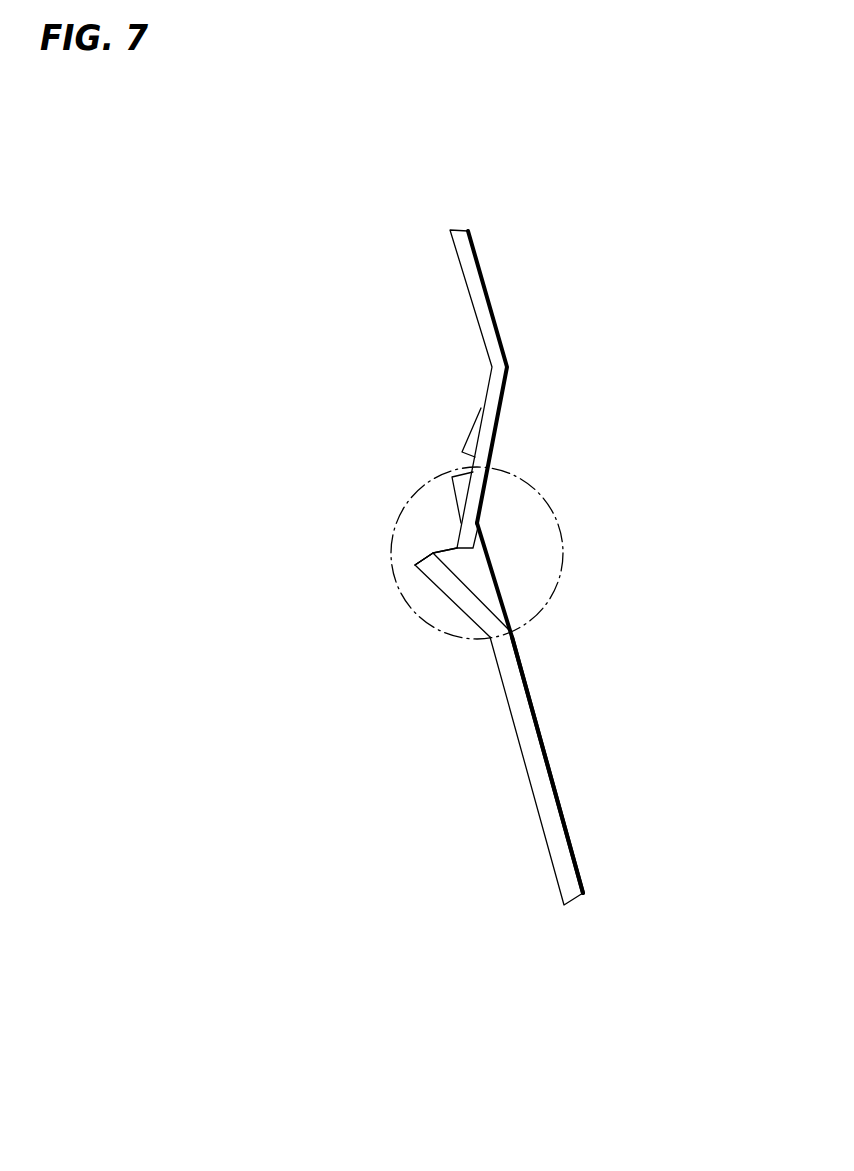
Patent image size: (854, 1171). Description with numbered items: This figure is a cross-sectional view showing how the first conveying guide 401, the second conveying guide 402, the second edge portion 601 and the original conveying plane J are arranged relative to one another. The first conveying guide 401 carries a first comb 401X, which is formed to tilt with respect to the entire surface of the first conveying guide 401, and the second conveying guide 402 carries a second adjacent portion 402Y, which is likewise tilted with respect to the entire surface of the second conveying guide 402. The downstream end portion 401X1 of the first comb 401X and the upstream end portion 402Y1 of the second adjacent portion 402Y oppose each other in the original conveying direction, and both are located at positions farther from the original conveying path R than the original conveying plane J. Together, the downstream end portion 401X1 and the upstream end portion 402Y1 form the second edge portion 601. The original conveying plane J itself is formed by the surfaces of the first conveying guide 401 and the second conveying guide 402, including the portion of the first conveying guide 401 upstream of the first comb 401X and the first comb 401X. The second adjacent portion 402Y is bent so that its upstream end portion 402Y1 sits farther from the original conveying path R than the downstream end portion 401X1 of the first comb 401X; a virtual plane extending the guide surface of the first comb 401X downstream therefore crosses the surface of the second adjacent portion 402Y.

The first conveying guide 401 is at (470, 297).
The first comb 401X is at (463, 440).
The downstream end portion 401X1 is at (455, 547).
The second conveying guide 402 is at (537, 812).
The second adjacent portion 402Y is at (458, 606).
The upstream end portion 402Y1 is at (414, 566).
The second edge portion 601 is at (392, 565).
The original conveying path R is at (615, 563).
The original conveying plane J is at (570, 837).